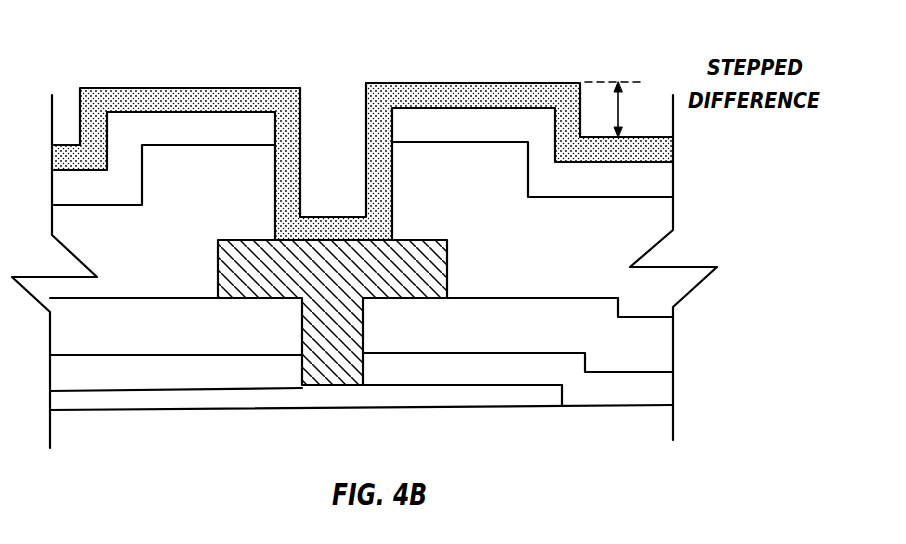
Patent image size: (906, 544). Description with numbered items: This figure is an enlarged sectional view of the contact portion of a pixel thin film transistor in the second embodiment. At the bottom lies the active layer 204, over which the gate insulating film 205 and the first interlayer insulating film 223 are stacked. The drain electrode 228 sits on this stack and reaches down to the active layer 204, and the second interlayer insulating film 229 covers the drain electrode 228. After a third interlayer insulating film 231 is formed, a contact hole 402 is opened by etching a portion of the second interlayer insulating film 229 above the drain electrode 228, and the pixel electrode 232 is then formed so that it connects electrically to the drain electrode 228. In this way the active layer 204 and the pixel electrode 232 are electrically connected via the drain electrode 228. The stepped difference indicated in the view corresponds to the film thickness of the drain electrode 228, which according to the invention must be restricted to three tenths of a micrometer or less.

The active layer 204 is at (532, 393).
The gate insulating film 205 is at (437, 367).
The first interlayer insulating film 223 is at (653, 355).
The drain electrode 228 is at (323, 373).
The second interlayer insulating film 229 is at (122, 268).
The third interlayer insulating film 231 is at (165, 128).
The pixel electrode 232 is at (507, 93).
The contact hole 402 is at (323, 137).